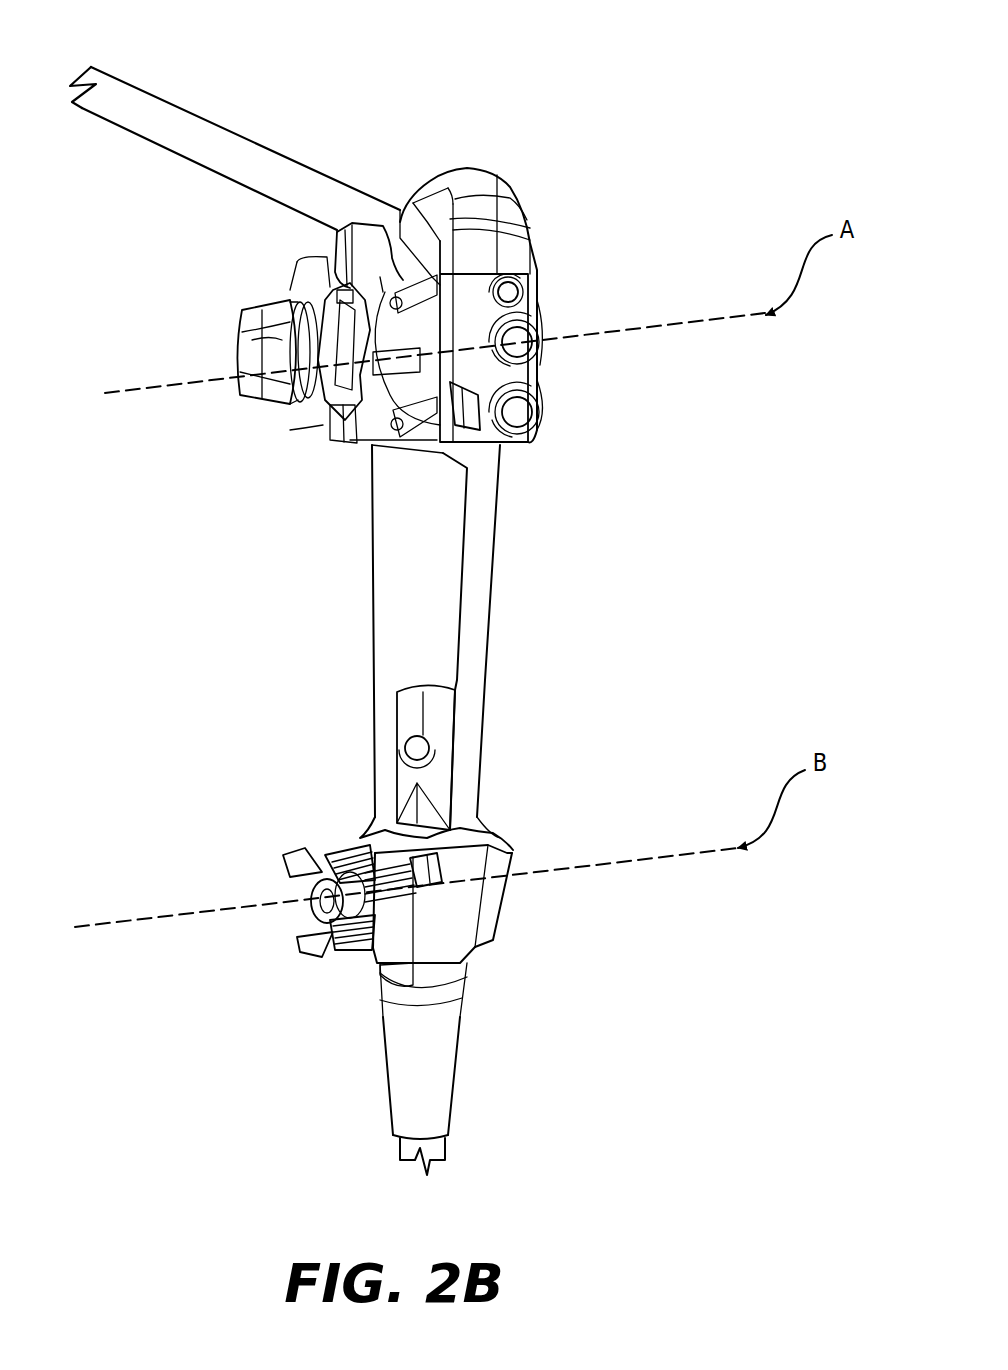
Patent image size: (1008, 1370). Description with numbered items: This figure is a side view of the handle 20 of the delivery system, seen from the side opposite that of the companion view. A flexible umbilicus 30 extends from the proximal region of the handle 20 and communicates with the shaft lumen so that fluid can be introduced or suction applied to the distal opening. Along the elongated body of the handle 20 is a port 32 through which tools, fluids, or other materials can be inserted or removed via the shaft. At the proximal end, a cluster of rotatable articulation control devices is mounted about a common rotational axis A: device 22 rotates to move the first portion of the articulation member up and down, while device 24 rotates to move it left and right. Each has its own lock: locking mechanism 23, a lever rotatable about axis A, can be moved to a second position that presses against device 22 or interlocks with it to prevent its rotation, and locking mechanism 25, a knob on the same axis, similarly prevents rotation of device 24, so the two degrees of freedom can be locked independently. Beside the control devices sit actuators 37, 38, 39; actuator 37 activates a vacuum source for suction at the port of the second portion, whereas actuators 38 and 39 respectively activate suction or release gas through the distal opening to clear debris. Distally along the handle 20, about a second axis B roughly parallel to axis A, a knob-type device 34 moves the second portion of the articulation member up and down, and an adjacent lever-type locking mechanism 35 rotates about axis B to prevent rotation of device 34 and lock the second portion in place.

The handle 20 is at (475, 130).
The articulation control device 22 is at (367, 222).
The locking mechanism 23 is at (470, 423).
The articulation control device 24 is at (330, 423).
The locking mechanism 25 is at (253, 335).
The umbilicus 30 is at (259, 152).
The port 32 is at (425, 740).
The device 34 is at (310, 943).
The locking mechanism 35 is at (428, 887).
The actuator 37 is at (508, 297).
The actuator 38 is at (513, 333).
The actuator 39 is at (517, 427).